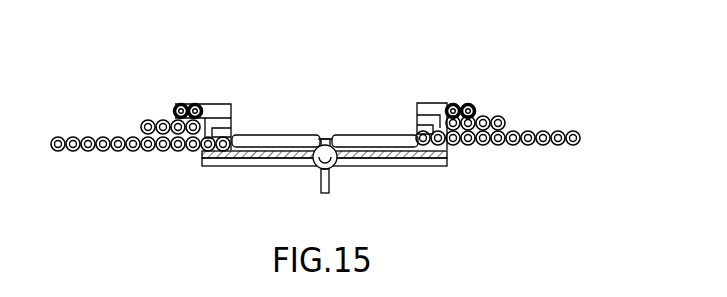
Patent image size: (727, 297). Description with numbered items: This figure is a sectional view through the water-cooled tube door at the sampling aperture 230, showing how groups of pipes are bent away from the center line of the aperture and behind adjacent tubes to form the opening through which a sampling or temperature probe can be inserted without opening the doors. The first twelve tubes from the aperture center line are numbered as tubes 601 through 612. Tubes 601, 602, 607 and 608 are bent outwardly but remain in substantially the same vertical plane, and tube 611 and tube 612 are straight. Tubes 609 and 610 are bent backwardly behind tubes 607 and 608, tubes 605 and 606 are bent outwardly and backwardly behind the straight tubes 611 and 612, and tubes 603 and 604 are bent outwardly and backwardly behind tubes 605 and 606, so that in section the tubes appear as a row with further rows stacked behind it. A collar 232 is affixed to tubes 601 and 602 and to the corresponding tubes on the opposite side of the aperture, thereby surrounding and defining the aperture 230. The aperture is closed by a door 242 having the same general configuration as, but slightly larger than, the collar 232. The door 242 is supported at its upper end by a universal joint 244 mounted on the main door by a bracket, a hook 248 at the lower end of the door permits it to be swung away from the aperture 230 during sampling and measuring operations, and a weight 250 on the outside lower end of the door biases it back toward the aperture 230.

The sampling aperture 230 is at (285, 137).
The collar 232 is at (228, 140).
The door 242 is at (267, 166).
The universal joint 244 is at (330, 168).
The hook 248 is at (322, 182).
The weight 250 is at (223, 163).
The tube 601 is at (417, 138).
The tube 602 is at (440, 147).
The tube 603 is at (452, 106).
The tube 604 is at (467, 106).
The tube 605 is at (465, 118).
The tube 606 is at (481, 118).
The tube 607 is at (455, 145).
The tube 608 is at (475, 143).
The tube 609 is at (490, 118).
The tube 610 is at (505, 122).
The tube 611 is at (494, 143).
The tube 612 is at (512, 144).